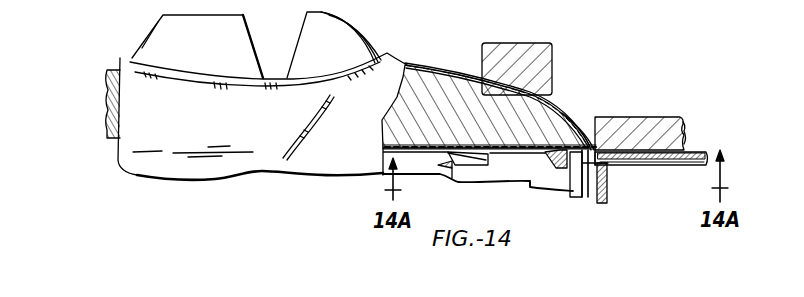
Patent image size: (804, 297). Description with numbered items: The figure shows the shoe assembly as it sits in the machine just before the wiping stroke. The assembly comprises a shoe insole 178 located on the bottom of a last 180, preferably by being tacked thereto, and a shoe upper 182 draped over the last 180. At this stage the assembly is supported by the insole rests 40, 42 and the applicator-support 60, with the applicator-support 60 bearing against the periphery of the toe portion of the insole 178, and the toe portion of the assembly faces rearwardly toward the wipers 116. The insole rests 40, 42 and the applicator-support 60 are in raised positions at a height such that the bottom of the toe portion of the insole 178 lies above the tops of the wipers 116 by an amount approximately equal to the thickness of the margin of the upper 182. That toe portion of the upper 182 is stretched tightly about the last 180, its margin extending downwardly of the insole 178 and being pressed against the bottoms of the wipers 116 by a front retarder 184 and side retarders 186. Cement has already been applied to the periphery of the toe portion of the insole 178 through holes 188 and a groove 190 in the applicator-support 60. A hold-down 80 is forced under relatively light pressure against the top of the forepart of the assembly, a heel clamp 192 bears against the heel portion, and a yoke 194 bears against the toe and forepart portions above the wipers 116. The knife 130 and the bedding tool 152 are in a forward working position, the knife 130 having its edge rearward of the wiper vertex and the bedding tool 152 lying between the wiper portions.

The heel clamp 192 is at (107, 105).
The shoe upper 182 is at (437, 52).
The last 180 is at (464, 88).
The hold-down 80 is at (548, 72).
The yoke 194 is at (633, 127).
The groove 190 is at (578, 130).
The bedding tool 152 is at (688, 152).
The wipers 116 is at (672, 164).
The knife 130 is at (644, 162).
The front retarder 184 is at (607, 198).
The holes 188 is at (580, 185).
The insole rest 40 is at (545, 157).
The shoe insole 178 is at (430, 150).
The applicator-support 60 is at (491, 172).
The insole rest 42 is at (450, 173).
The side retarders 186 is at (548, 186).